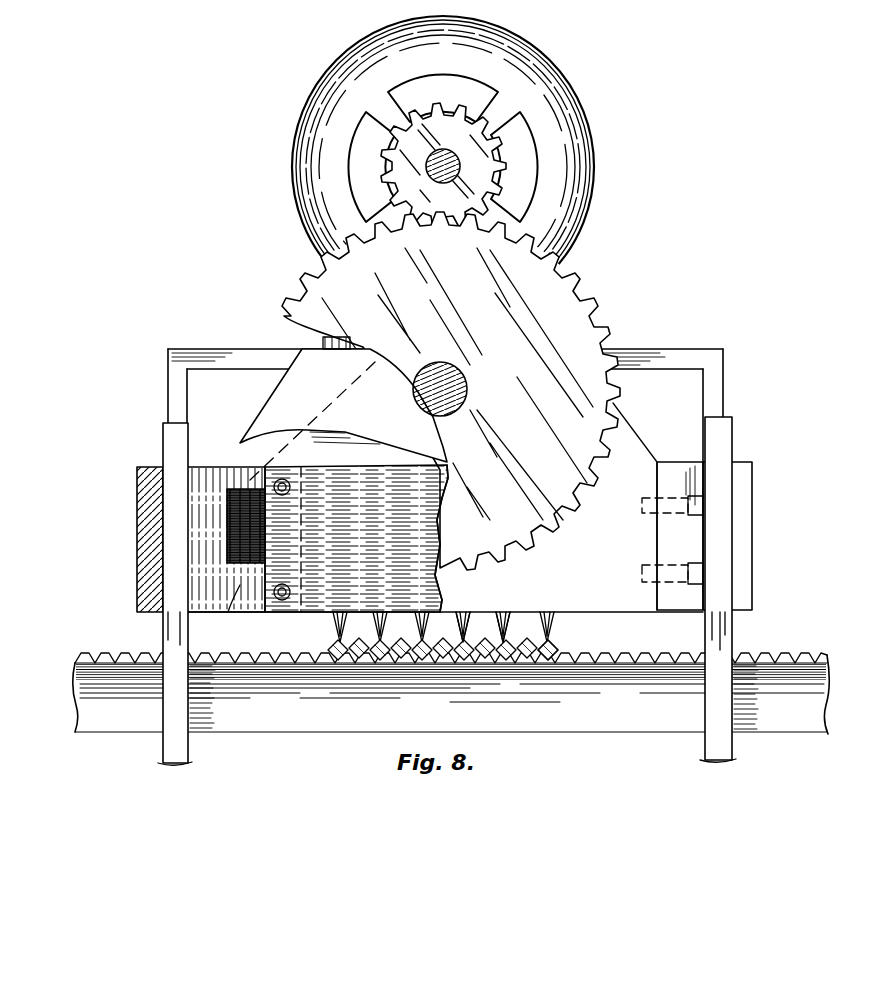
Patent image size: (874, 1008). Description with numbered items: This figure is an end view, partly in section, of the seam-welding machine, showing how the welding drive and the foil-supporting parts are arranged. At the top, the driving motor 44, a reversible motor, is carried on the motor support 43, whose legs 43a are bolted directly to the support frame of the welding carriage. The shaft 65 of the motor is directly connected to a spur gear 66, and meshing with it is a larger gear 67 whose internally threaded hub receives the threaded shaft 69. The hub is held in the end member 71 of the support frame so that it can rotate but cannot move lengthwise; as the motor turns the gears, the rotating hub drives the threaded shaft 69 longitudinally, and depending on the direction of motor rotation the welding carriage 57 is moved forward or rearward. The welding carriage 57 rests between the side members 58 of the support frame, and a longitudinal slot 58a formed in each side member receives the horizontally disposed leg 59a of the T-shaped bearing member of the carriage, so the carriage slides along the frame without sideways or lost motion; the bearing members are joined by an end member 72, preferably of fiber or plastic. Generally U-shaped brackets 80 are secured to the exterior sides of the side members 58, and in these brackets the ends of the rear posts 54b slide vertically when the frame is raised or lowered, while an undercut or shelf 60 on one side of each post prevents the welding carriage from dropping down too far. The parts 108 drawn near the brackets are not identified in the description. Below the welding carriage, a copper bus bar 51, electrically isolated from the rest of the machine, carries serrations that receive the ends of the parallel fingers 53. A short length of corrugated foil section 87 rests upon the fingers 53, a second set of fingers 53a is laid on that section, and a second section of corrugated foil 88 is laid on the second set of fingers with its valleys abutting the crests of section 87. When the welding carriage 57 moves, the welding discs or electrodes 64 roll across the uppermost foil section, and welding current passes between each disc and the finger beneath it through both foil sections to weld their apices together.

The driving motor 44 is at (577, 142).
The spur gear 66 is at (405, 140).
The shaft 65 is at (449, 161).
The motor support 43 is at (215, 358).
The legs 43a is at (175, 395).
The larger gear 67 is at (592, 318).
The threaded shaft 69 is at (455, 392).
The end member 71 is at (288, 392).
The welding carriage 57 is at (391, 454).
The end member 72 is at (435, 462).
The side members 58 is at (205, 487).
The leg 59a is at (250, 512).
The U-shaped brackets 80 is at (148, 513).
The adjusting screws 108 is at (664, 568).
The undercut or shelf 60 is at (175, 630).
The posts 54b is at (168, 630).
The longitudinal slot 58a is at (240, 587).
The welding discs 64 is at (340, 628).
The second section of corrugated foil 88 is at (330, 650).
The corrugated foil section 87 is at (555, 655).
The fingers 53 is at (480, 638).
The second set of fingers 53a is at (520, 645).
The bus bar 51 is at (115, 698).